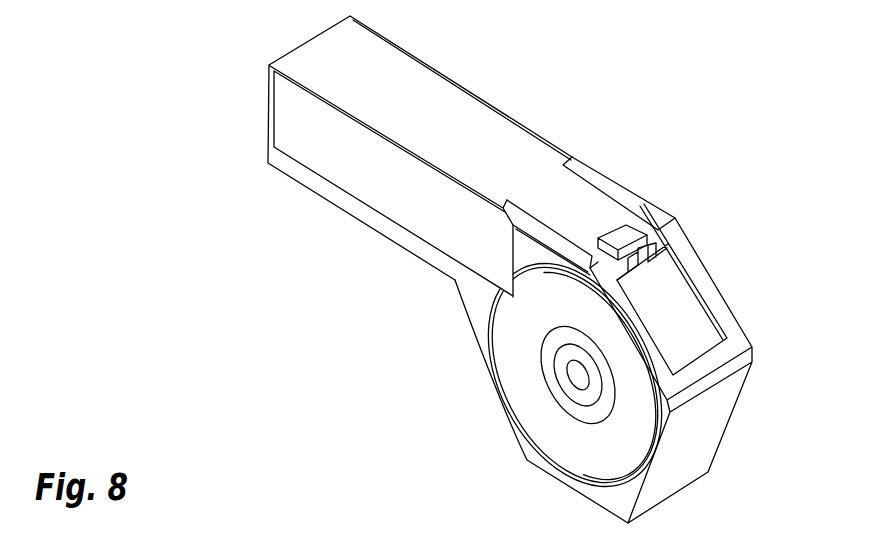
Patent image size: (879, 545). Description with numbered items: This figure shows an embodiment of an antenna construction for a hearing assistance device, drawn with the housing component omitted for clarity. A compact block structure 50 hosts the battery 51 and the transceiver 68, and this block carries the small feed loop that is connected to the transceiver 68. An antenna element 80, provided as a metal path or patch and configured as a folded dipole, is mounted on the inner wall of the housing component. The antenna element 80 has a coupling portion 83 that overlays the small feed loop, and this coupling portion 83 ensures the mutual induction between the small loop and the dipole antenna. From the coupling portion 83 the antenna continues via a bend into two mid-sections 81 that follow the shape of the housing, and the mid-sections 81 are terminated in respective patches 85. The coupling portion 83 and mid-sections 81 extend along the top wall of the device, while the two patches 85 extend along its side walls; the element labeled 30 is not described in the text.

The clip 30 is at (657, 255).
The compact block structure 50 is at (418, 264).
The battery 51 is at (540, 416).
The transceiver 68 is at (623, 224).
The antenna element 80 is at (545, 134).
The mid-sections 81 is at (584, 172).
The coupling portion 83 is at (715, 293).
The patches 85 is at (327, 154).